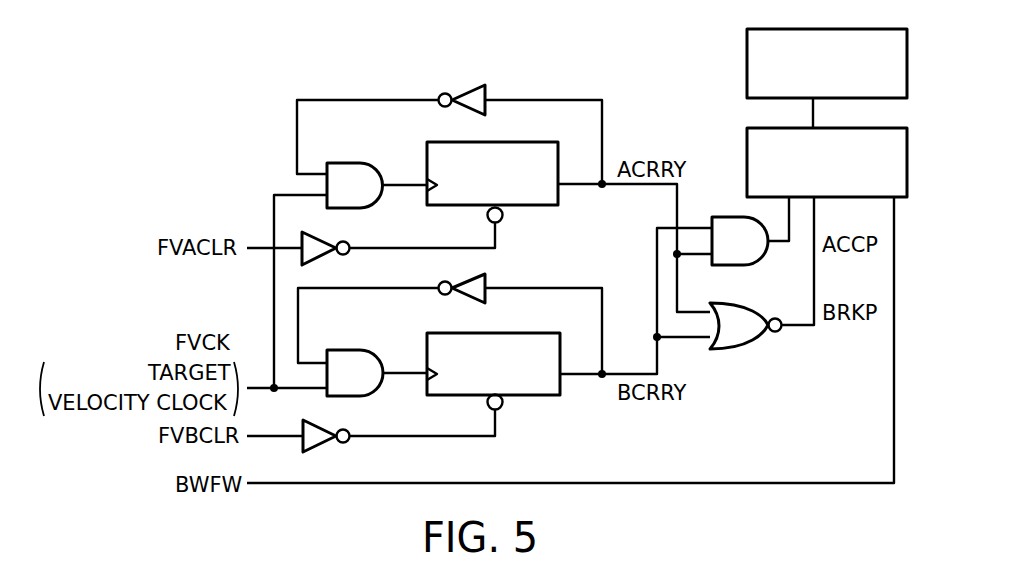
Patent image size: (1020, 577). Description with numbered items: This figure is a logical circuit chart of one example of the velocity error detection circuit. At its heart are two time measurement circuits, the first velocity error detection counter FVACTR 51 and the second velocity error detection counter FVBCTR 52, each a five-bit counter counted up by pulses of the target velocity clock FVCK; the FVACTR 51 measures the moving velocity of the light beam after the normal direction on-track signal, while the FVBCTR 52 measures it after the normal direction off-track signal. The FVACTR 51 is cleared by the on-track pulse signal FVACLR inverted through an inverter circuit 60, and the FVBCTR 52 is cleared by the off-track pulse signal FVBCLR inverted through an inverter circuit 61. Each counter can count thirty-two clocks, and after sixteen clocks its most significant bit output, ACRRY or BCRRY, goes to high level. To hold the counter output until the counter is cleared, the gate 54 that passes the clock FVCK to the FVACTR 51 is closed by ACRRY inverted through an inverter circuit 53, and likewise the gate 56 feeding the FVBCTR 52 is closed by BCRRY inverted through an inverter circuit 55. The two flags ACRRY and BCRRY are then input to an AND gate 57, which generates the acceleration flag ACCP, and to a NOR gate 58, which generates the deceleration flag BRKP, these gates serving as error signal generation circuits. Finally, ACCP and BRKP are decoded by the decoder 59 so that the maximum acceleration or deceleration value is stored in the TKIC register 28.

The TKIC register 28 is at (747, 75).
The first velocity error detection counter (FVACTR) 51 is at (534, 142).
The second velocity error detection counter (FVBCTR) 52 is at (534, 333).
The inverter circuit 53 is at (467, 86).
The gate 54 is at (350, 163).
The inverter circuit 55 is at (467, 304).
The gate 56 is at (352, 350).
The AND gate 57 is at (758, 263).
The NOR gate 58 is at (740, 350).
The decoder 59 is at (747, 169).
The inverter circuit 60 is at (326, 241).
The inverter circuit 61 is at (326, 429).